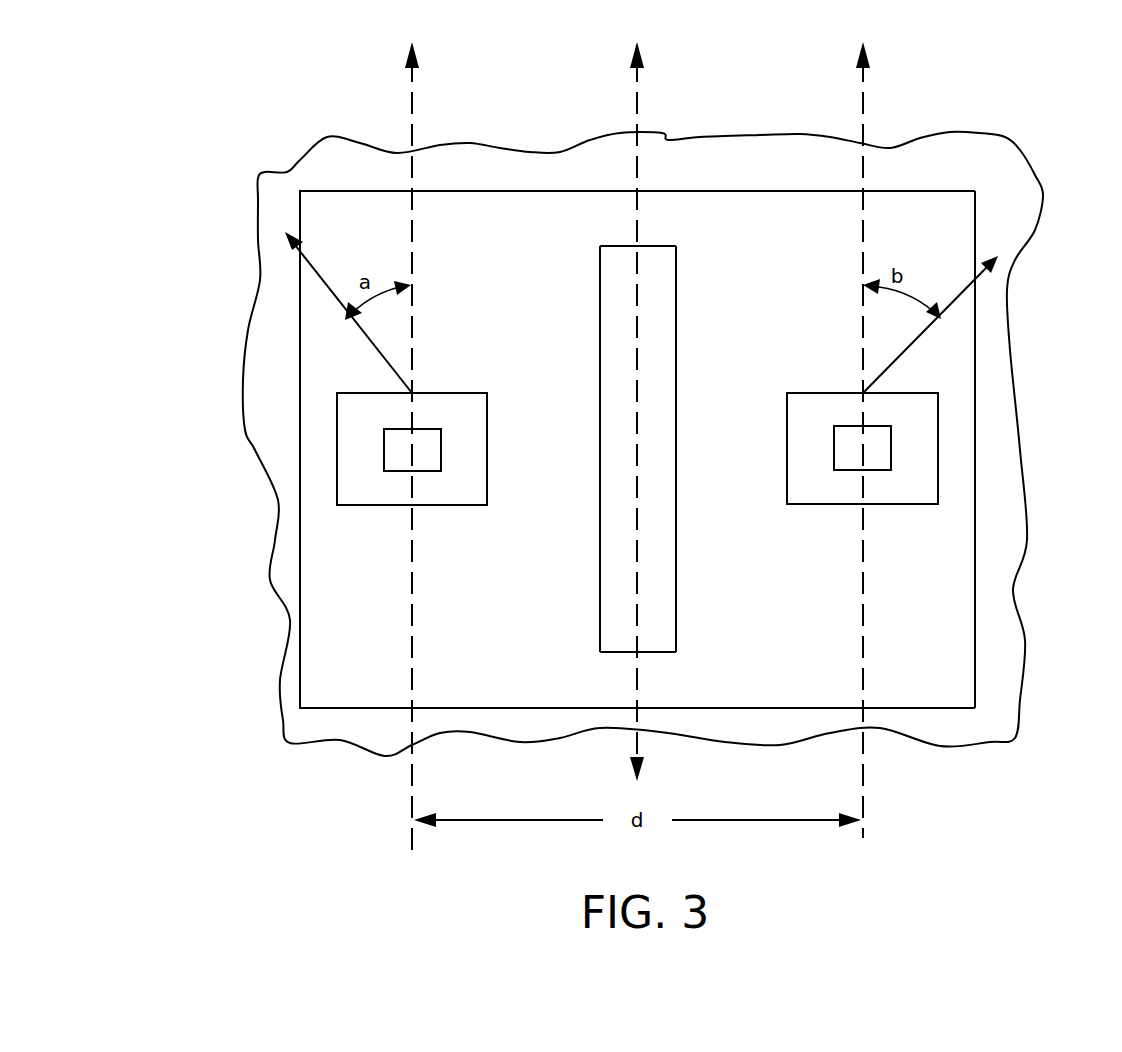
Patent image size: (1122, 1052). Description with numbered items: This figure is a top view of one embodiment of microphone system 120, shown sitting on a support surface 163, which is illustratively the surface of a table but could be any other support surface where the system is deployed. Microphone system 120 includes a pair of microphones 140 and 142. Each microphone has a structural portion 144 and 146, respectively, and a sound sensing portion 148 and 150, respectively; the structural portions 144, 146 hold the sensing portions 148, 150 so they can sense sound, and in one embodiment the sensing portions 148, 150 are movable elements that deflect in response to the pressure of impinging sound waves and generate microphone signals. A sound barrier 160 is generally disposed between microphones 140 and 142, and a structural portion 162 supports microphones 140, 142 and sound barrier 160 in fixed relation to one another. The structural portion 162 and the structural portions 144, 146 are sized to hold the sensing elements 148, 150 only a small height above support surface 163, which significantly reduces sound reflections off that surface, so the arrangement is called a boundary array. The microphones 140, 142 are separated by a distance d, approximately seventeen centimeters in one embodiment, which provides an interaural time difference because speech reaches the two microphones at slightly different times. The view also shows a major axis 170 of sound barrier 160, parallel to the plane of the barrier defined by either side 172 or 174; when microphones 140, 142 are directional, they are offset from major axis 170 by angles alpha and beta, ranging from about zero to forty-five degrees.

The microphone system 120 is at (346, 178).
The microphone 140 is at (566, 508).
The microphone 142 is at (893, 441).
The structural portion 144 is at (488, 448).
The structural portion 146 is at (787, 447).
The sound sensing portion 148 is at (384, 447).
The sound sensing portion 150 is at (863, 470).
The sound barrier 160 is at (630, 424).
The structural portion 162 is at (975, 372).
The support surface 163 is at (706, 434).
The major axis 170 is at (640, 85).
The side of sound barrier 172 is at (677, 300).
The side of sound barrier 174 is at (599, 300).